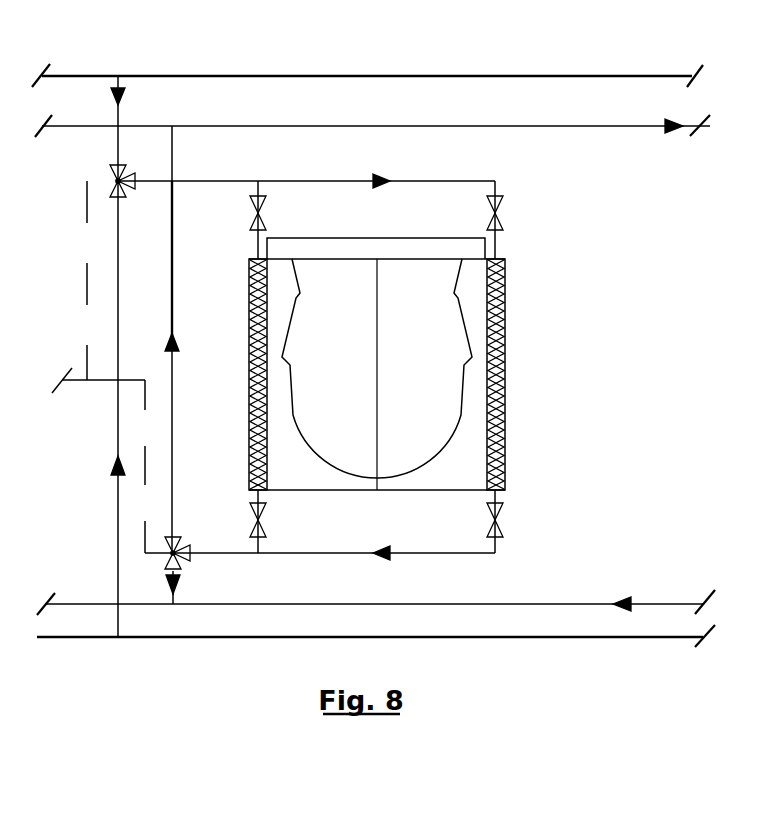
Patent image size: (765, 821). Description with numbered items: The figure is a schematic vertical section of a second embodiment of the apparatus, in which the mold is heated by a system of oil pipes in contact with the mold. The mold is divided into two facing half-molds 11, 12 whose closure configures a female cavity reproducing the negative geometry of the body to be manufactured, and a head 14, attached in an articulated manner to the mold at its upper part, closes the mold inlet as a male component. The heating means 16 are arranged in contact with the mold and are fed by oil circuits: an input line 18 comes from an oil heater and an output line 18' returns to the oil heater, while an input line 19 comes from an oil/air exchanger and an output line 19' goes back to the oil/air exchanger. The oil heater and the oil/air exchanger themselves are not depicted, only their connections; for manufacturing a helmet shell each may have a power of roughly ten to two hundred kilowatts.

The input line 18 is at (367, 50).
The output line 18' is at (372, 112).
The input line 19 is at (376, 655).
The output line 19' is at (376, 576).
The head 14 is at (402, 248).
The heating means 16 is at (493, 345).
The half-mold 11 is at (290, 470).
The half-mold 12 is at (458, 470).